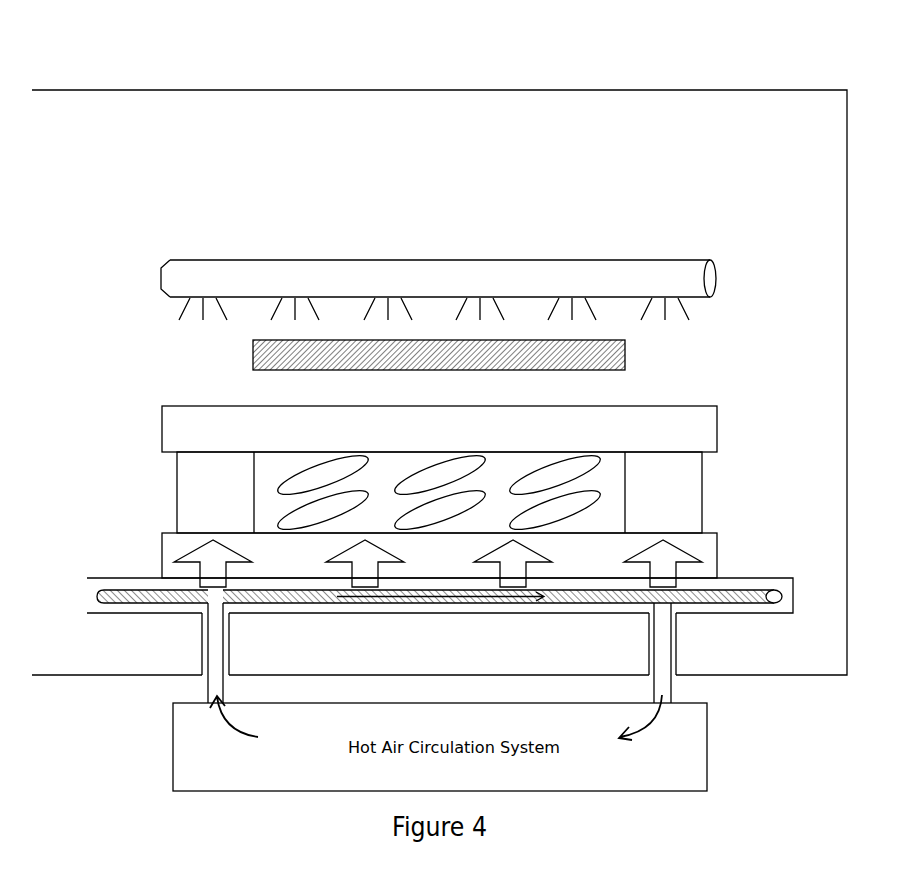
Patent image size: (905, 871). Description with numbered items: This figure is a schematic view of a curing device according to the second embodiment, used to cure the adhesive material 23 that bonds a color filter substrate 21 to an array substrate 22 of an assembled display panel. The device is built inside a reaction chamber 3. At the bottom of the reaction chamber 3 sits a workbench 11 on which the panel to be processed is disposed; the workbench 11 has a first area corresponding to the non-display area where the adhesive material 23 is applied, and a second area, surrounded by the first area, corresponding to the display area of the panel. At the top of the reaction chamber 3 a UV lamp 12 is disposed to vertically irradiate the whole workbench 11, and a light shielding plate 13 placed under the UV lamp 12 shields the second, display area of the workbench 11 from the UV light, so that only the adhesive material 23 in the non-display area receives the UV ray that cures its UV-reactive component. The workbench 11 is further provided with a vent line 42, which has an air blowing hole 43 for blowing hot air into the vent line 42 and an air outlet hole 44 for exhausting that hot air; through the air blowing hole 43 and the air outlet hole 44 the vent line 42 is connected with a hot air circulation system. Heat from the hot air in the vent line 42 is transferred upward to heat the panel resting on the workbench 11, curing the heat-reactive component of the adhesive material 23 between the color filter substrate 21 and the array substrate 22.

The reaction chamber 3 is at (722, 90).
The workbench 11 is at (725, 583).
The UV lamp 12 is at (716, 285).
The light shielding plate 13 is at (588, 354).
The color filter substrate 21 is at (689, 426).
The array substrate 22 is at (676, 583).
The adhesive material 23 is at (689, 490).
The vent line 42 is at (153, 593).
The air blowing hole 43 is at (213, 602).
The air outlet hole 44 is at (661, 603).